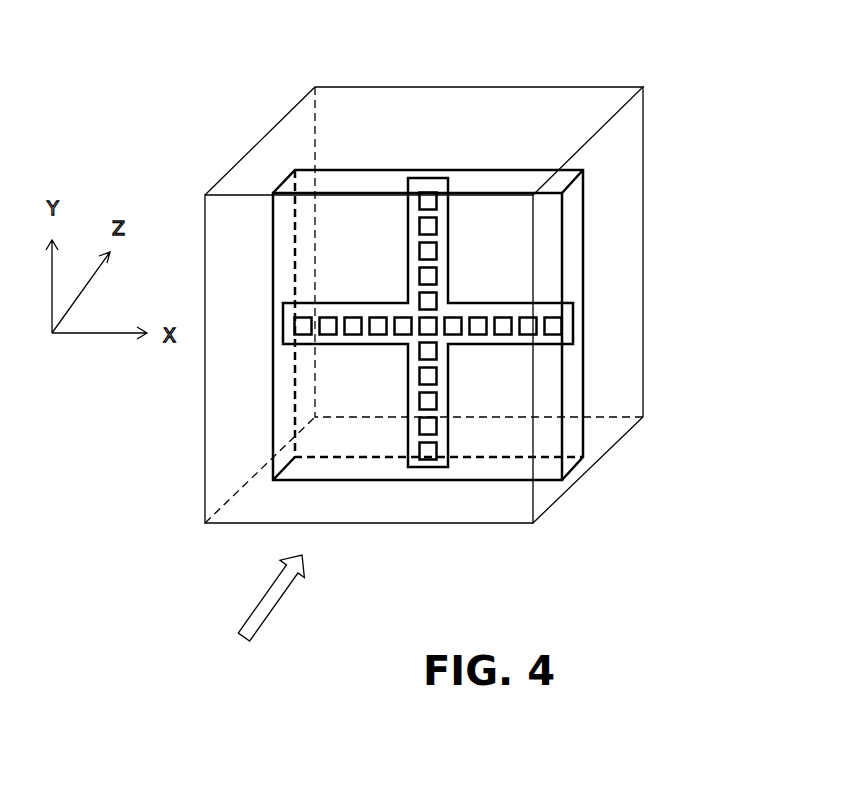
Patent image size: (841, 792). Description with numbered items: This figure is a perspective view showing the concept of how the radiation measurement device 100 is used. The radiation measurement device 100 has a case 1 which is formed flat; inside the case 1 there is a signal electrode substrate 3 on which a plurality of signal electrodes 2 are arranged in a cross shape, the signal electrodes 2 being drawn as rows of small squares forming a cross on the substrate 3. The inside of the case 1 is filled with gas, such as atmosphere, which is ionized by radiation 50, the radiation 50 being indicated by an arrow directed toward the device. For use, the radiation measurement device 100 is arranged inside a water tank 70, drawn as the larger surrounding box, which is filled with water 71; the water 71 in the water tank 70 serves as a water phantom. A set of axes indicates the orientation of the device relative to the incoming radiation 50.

The radiation measurement device 100 is at (252, 77).
The case 1 is at (287, 175).
The signal electrodes 2 is at (425, 200).
The signal electrode substrate 3 is at (510, 305).
The radiation 50 is at (257, 593).
The water tank 70 is at (518, 90).
The water 71 is at (562, 113).